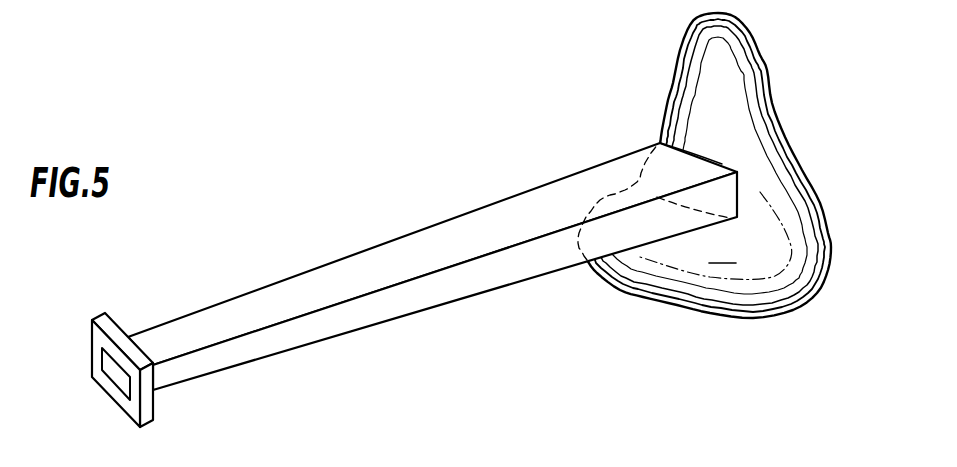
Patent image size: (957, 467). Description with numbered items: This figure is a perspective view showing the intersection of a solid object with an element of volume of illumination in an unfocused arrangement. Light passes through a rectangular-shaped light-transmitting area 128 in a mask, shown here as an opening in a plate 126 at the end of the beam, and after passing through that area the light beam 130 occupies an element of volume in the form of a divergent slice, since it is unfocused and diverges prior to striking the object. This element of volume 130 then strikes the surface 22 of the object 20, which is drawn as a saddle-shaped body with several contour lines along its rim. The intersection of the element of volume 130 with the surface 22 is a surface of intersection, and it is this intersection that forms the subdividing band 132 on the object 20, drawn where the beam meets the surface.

The object 20 is at (709, 165).
The surface 22 is at (744, 105).
The end plate 126 is at (107, 323).
The rectangular-shaped light-transmitting area 128 is at (110, 388).
The light beam 130 is at (452, 290).
The band 132 is at (716, 151).